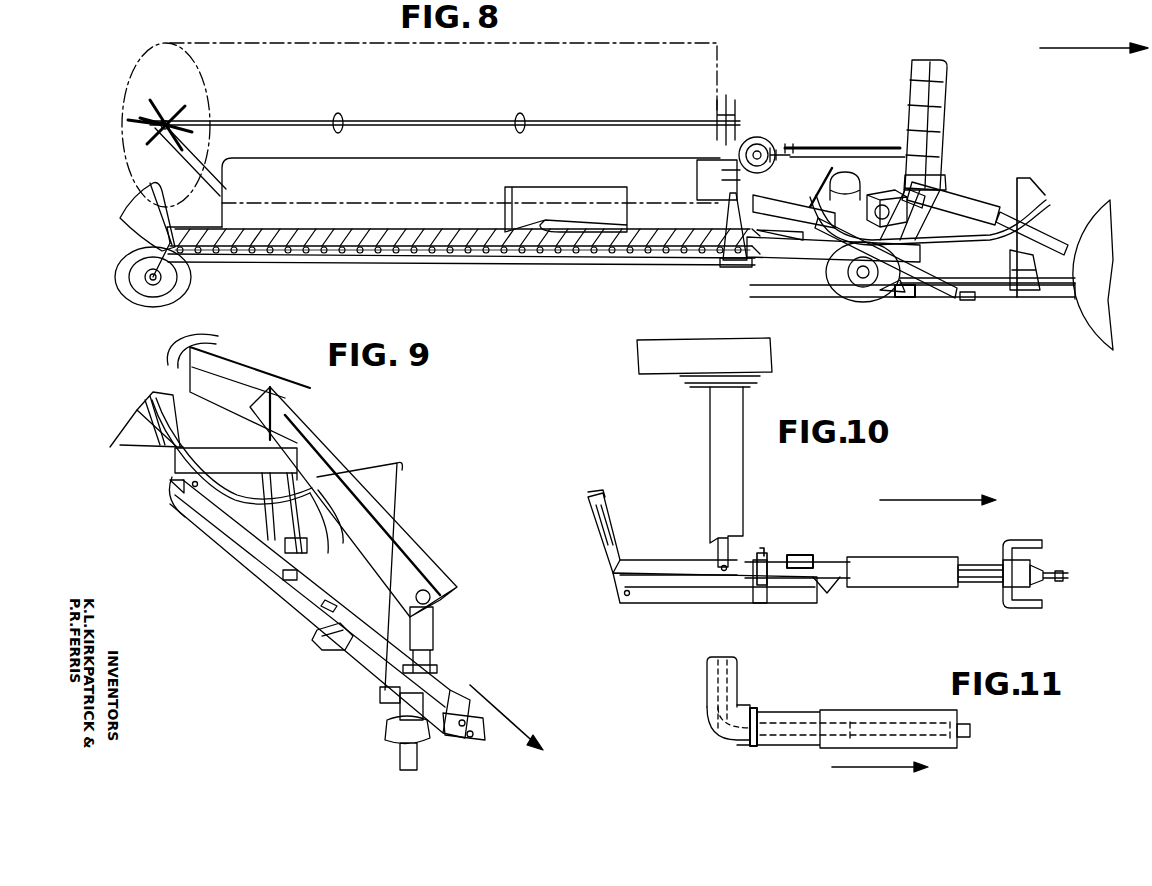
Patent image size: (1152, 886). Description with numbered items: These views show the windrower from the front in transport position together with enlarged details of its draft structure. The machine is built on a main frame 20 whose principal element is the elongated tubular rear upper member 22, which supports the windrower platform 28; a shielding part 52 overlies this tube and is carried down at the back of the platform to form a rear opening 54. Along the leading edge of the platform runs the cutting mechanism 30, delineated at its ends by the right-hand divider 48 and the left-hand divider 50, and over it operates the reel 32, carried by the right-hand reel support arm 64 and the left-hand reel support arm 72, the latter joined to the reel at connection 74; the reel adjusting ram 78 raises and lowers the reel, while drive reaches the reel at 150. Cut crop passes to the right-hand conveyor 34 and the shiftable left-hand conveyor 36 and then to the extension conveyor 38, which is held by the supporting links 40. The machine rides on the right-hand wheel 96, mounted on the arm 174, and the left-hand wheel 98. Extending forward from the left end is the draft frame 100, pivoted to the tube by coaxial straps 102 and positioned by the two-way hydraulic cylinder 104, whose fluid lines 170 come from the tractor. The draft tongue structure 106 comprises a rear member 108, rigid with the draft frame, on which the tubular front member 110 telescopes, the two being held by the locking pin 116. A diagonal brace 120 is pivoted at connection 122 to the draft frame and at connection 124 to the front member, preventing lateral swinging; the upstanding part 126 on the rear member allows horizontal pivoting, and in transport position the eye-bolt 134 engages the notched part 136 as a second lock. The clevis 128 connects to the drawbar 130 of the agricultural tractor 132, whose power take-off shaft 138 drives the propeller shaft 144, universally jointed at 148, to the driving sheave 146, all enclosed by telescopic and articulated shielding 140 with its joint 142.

In FIG. 8, the main frame 20 is at (272, 155).
In FIG. 8, the tubular rear upper member 22 is at (838, 165).
In FIG. 10, the tubular rear upper member 22 is at (676, 348).
In FIG. 8, the windrower platform 28 is at (255, 258).
In FIG. 8, the cutting mechanism 30 is at (337, 252).
In FIG. 8, the reel 32 is at (176, 78).
In FIG. 8, the right-hand conveyor 34 is at (392, 232).
In FIG. 8, the left-hand conveyor 36 is at (690, 222).
In FIG. 8, the extension conveyor 38 is at (944, 102).
In FIG. 8, the supporting links 40 is at (806, 150).
In FIG. 8, the right-hand divider 48 is at (123, 226).
In FIG. 8, the left-hand divider 50 is at (738, 266).
In FIG. 8, the shielding 52 is at (403, 160).
In FIG. 8, the rear opening 54 is at (512, 215).
In FIG. 8, the right-hand reel support arm 64 is at (215, 182).
In FIG. 8, the left-hand reel support arm 72 is at (735, 168).
In FIG. 8, the reel connection 74 is at (735, 114).
In FIG. 8, the reel adjusting ram 78 is at (768, 160).
In FIG. 8, the right-hand supporting wheel 96 is at (125, 286).
In FIG. 8, the left-hand supporting wheel 98 is at (836, 286).
In FIG. 9, the left-hand supporting wheel 98 is at (184, 513).
In FIG. 8, the draft frame 100 is at (807, 238).
In FIG. 9, the draft frame 100 is at (133, 445).
In FIG. 10, the draft frame 100 is at (590, 502).
In FIG. 8, the coaxial straps 102 is at (740, 192).
In FIG. 8, the two-way hydraulic cylinder 104 is at (800, 208).
In FIG. 9, the two-way hydraulic cylinder 104 is at (141, 399).
In FIG. 10, the two-way hydraulic cylinder 104 is at (618, 501).
In FIG. 8, the draft tongue structure 106 is at (985, 305).
In FIG. 9, the draft tongue structure 106 is at (318, 663).
In FIG. 10, the draft tongue structure 106 is at (840, 553).
In FIG. 8, the rear draft tongue member 108 is at (906, 290).
In FIG. 10, the rear draft tongue member 108 is at (800, 565).
In FIG. 8, the front draft tongue member 110 is at (1000, 292).
In FIG. 9, the front draft tongue member 110 is at (436, 690).
In FIG. 10, the front draft tongue member 110 is at (836, 586).
In FIG. 8, the locking pin 116 is at (939, 280).
In FIG. 9, the locking pin 116 is at (334, 599).
In FIG. 10, the locking pin 116 is at (808, 557).
In FIG. 10, the diagonal brace 120 is at (680, 603).
In FIG. 9, the pivotal connection 122 is at (190, 486).
In FIG. 10, the pivotal connection 122 is at (623, 593).
In FIG. 8, the pivotal connection 124 is at (892, 290).
In FIG. 9, the pivotal connection 124 is at (280, 524).
In FIG. 10, the pivotal connection 124 is at (818, 598).
In FIG. 9, the upstanding part 126 is at (295, 443).
In FIG. 10, the upstanding part 126 is at (720, 567).
In FIG. 8, the clevis 128 is at (1075, 293).
In FIG. 9, the clevis 128 is at (474, 738).
In FIG. 10, the drawbar 130 is at (1016, 540).
In FIG. 8, the agricultural tractor 132 is at (1096, 322).
In FIG. 8, the eye-bolt 134 is at (921, 266).
In FIG. 9, the eye-bolt 134 is at (290, 582).
In FIG. 10, the eye-bolt 134 is at (756, 585).
In FIG. 9, the notched part 136 is at (287, 552).
In FIG. 10, the notched part 136 is at (767, 557).
In FIG. 10, the power take-off shaft 138 is at (1059, 572).
In FIG. 8, the telescopic and articulated shielding 140 is at (972, 207).
In FIG. 9, the telescopic and articulated shielding 140 is at (416, 528).
In FIG. 10, the telescopic and articulated shielding 140 is at (900, 564).
In FIG. 11, the telescopic and articulated shielding 140 is at (864, 708).
In FIG. 8, the shielding joint 142 is at (925, 195).
In FIG. 11, the shielding joint 142 is at (743, 707).
In FIG. 8, the propeller shaft 144 is at (935, 215).
In FIG. 9, the propeller shaft 144 is at (425, 627).
In FIG. 10, the propeller shaft 144 is at (993, 550).
In FIG. 11, the propeller shaft 144 is at (971, 730).
In FIG. 8, the driving sheave 146 is at (890, 153).
In FIG. 9, the driving sheave 146 is at (202, 340).
In FIG. 8, the universal joint 148 is at (871, 209).
In FIG. 11, the universal joint 148 is at (723, 737).
In FIG. 8, the reel drive 150 is at (755, 138).
In FIG. 8, the fluid lines 170 is at (1043, 203).
In FIG. 9, the fluid lines 170 is at (193, 464).
In FIG. 8, the wheel arm 174 is at (142, 265).